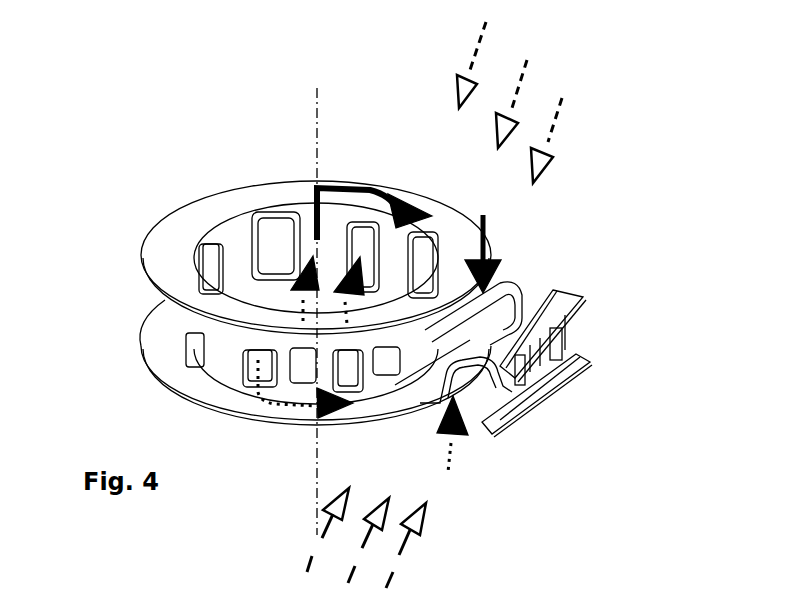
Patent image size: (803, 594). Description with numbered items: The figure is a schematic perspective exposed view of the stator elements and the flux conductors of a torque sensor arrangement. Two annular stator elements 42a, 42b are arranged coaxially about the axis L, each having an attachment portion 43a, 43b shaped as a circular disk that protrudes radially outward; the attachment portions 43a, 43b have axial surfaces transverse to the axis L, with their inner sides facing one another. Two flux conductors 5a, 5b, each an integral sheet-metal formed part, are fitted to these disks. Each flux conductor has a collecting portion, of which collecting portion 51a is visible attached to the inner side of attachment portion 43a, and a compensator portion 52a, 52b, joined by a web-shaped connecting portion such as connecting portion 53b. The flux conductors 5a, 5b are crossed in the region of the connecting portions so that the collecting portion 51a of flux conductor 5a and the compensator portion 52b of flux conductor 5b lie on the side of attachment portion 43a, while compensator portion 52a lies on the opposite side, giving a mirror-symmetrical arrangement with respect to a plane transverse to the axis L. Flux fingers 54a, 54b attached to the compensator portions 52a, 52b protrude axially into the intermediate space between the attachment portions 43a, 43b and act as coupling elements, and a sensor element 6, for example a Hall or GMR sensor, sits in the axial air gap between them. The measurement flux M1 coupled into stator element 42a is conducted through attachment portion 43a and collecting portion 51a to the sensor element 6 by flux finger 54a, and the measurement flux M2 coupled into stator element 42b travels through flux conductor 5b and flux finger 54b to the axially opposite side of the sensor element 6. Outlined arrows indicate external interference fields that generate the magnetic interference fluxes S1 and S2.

The axis L is at (317, 117).
The stator element 42a is at (300, 237).
The stator element 42b is at (265, 352).
The attachment portion 43a is at (438, 220).
The attachment portion 43b is at (358, 412).
The measurement flux M1 is at (403, 193).
The measurement flux M2 is at (350, 395).
The magnetic interference flux S1 is at (542, 167).
The magnetic interference flux S2 is at (413, 518).
The flux conductor 5a is at (592, 358).
The flux conductor 5b is at (573, 283).
The collecting portion 51a is at (473, 312).
The compensator portion 52a is at (548, 375).
The compensator portion 52b is at (585, 297).
The connecting portion 53b is at (480, 383).
The flux finger 54a is at (507, 380).
The flux finger 54b is at (560, 363).
The sensor element 6 is at (550, 383).